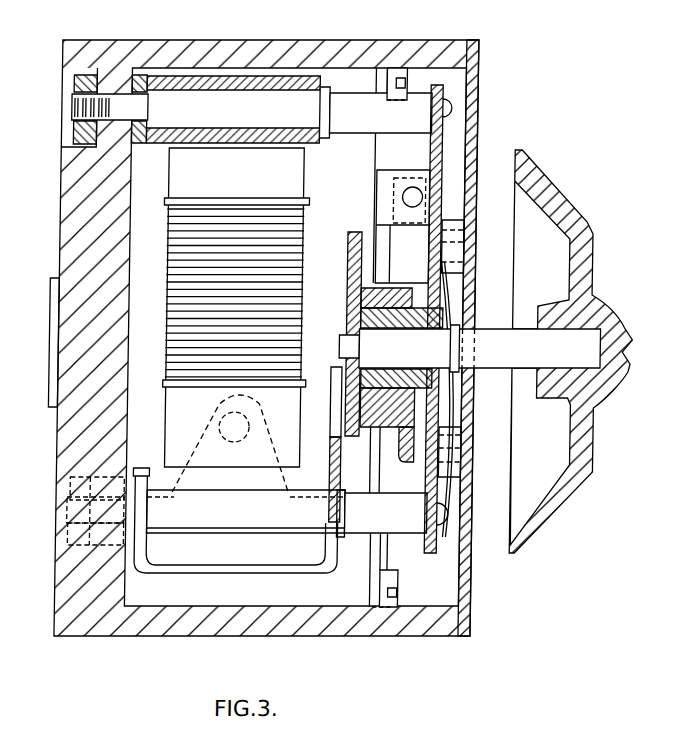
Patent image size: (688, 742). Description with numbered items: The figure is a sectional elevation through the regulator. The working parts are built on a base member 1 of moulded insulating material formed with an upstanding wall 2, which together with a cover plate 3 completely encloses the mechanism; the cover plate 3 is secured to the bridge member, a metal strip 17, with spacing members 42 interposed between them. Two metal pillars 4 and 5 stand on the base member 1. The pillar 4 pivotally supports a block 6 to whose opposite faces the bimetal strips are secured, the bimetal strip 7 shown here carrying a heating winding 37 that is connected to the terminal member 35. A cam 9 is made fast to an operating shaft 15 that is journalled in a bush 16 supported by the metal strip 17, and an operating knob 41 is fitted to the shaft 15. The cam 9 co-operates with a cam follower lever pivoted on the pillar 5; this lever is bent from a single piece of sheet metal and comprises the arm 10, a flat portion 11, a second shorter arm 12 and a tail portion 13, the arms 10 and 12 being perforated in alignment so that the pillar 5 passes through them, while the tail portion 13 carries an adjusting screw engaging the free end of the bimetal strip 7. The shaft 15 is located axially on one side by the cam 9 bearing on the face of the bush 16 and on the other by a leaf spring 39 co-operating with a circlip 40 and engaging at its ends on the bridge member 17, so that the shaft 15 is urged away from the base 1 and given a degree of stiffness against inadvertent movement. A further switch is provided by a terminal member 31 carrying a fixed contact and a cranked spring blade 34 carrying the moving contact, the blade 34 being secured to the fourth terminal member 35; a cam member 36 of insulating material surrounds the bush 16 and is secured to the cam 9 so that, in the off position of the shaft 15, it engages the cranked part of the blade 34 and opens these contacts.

The base member 1 is at (67, 471).
The upstanding wall 2 is at (240, 53).
The cover plate 3 is at (473, 47).
The pillar 4 is at (352, 97).
The pillar 5 is at (374, 524).
The block 6 is at (197, 76).
The bimetal strip 7 is at (185, 192).
The cam 9 is at (355, 231).
The cam follower lever arm 10 is at (336, 458).
The flat portion 11 is at (229, 574).
The second shorter arm 12 is at (158, 492).
The tail portion 13 is at (208, 492).
The operating shaft 15 is at (518, 357).
The bush 16 is at (363, 309).
The metal strip 17 is at (444, 133).
The terminal member 31 is at (399, 170).
The spring blade 34 is at (401, 254).
The terminal member 35 is at (386, 558).
The cam member 36 is at (405, 464).
The heating winding 37 is at (187, 240).
The leaf spring 39 is at (448, 291).
The circlip 40 is at (466, 320).
The operating knob 41 is at (584, 430).
The spacing members 42 is at (466, 224).